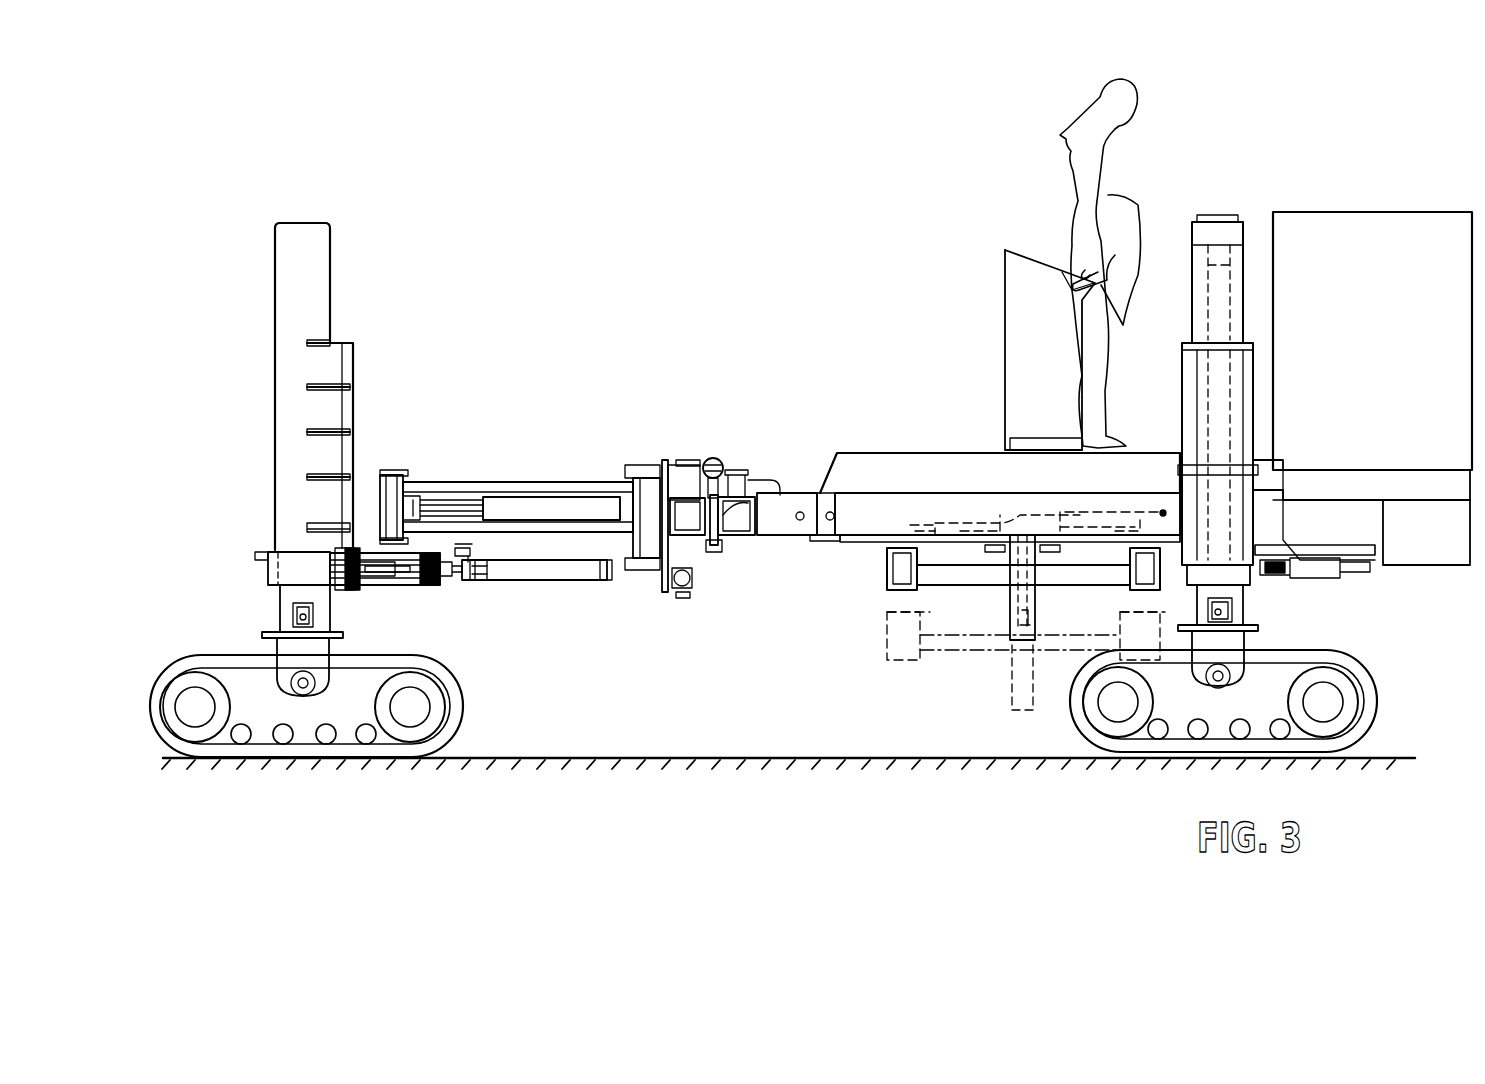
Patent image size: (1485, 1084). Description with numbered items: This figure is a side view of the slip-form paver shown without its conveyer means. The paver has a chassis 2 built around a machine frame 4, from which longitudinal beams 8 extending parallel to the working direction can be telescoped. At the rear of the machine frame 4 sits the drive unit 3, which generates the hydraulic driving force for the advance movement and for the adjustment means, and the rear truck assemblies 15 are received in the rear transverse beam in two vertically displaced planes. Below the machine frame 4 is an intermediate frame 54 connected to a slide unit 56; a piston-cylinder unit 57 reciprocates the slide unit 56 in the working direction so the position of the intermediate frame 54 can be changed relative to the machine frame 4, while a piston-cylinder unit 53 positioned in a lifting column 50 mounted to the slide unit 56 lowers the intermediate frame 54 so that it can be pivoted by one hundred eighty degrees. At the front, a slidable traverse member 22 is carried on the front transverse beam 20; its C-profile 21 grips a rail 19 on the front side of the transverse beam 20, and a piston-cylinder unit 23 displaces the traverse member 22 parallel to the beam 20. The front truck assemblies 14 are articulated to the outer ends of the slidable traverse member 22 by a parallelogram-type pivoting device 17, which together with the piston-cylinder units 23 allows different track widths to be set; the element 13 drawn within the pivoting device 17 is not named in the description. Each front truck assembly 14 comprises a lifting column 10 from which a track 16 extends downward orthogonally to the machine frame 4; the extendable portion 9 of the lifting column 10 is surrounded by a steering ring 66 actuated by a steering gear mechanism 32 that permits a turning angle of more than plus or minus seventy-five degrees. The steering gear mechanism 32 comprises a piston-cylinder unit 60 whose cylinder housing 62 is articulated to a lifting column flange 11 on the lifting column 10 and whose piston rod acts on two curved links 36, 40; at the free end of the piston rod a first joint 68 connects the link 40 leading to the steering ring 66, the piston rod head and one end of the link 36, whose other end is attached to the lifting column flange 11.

The chassis 2 is at (817, 408).
The drive unit 3 is at (1333, 230).
The machine frame 4 is at (895, 465).
The longitudinal beams 8 is at (785, 537).
The extendable portion 9 is at (282, 613).
The lifting column 10 is at (285, 301).
The lifting column flange 11 is at (470, 554).
The hydraulic cylinder 13 is at (553, 505).
The front truck assemblies 14 is at (328, 669).
The rear truck assemblies 15 is at (1248, 483).
The track 16 is at (455, 696).
The pivoting device 17 is at (520, 498).
The rail 19 is at (757, 470).
The front transverse beam 20 is at (737, 537).
The C-profile 21 is at (716, 552).
The slidable traverse member 22 is at (678, 443).
The piston-cylinder unit 23 is at (716, 457).
The steering gear mechanism 32 is at (440, 582).
The link 36 is at (378, 582).
The link 40 is at (393, 578).
The lifting column 50 is at (1007, 618).
The piston-cylinder unit 53 is at (1018, 598).
The intermediate frame 54 is at (1090, 575).
The slide unit 56 is at (1030, 515).
The piston-cylinder unit 57 is at (1113, 505).
The piston-cylinder unit 60 is at (532, 580).
The cylinder housing 62 is at (598, 575).
The steering ring 66 is at (270, 559).
The first joint 68 is at (450, 576).